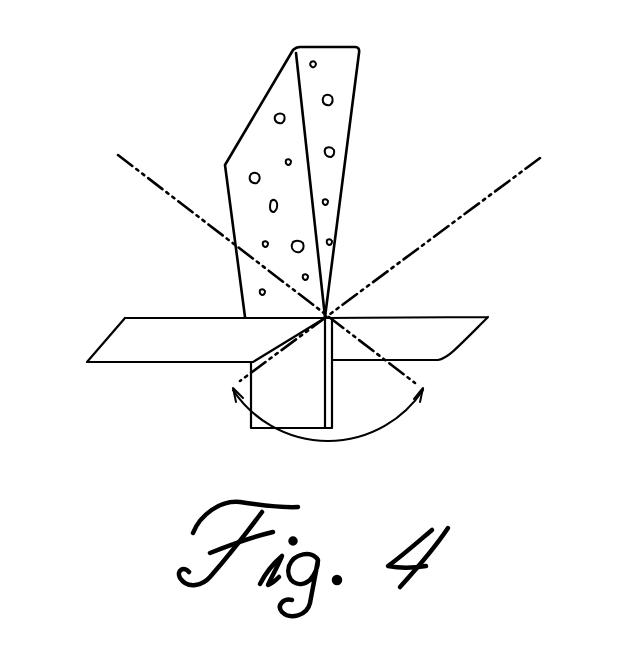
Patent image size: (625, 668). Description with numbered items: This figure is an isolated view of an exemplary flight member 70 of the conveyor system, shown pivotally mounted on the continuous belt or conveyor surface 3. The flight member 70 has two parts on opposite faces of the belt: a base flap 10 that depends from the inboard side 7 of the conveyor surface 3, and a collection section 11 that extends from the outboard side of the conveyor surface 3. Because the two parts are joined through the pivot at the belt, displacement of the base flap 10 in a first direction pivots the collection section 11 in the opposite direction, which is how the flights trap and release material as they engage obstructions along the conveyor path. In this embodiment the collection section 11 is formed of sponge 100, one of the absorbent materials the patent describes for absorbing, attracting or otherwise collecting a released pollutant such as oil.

The sponge 100 is at (212, 137).
The flight member 70 is at (355, 155).
The collection section 11 is at (337, 68).
The conveyor surface 3 is at (141, 338).
The inboard side 7 is at (417, 340).
The base flap 10 is at (291, 397).